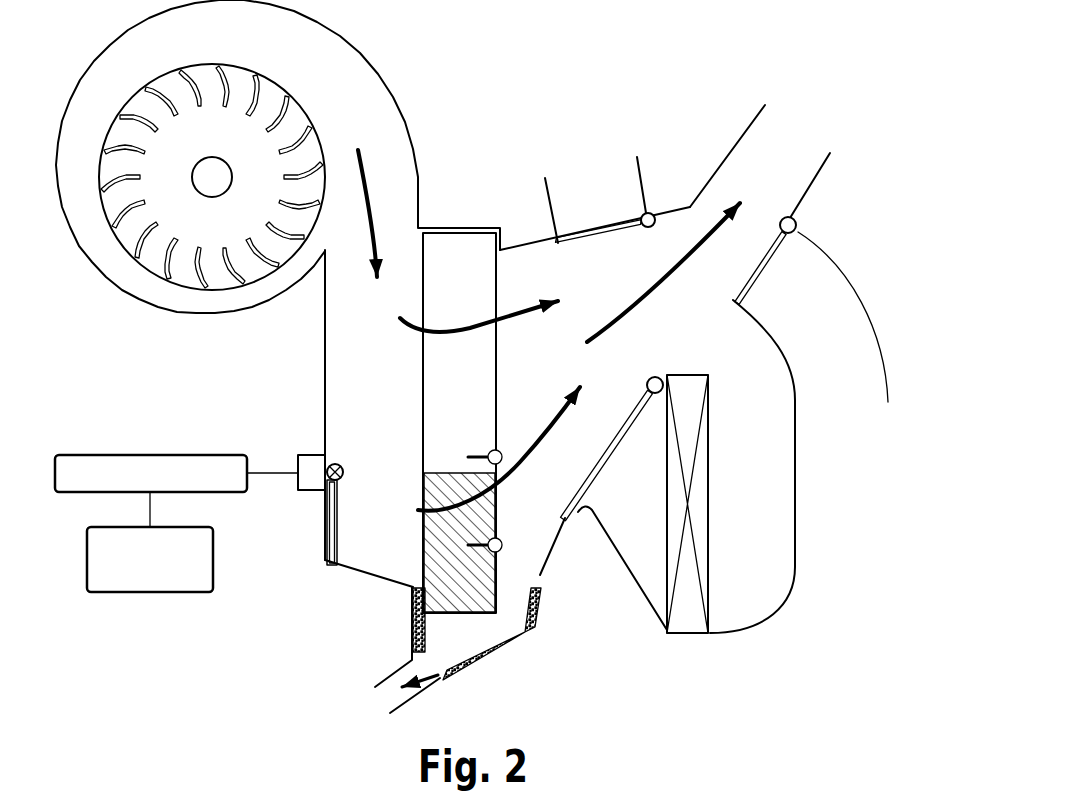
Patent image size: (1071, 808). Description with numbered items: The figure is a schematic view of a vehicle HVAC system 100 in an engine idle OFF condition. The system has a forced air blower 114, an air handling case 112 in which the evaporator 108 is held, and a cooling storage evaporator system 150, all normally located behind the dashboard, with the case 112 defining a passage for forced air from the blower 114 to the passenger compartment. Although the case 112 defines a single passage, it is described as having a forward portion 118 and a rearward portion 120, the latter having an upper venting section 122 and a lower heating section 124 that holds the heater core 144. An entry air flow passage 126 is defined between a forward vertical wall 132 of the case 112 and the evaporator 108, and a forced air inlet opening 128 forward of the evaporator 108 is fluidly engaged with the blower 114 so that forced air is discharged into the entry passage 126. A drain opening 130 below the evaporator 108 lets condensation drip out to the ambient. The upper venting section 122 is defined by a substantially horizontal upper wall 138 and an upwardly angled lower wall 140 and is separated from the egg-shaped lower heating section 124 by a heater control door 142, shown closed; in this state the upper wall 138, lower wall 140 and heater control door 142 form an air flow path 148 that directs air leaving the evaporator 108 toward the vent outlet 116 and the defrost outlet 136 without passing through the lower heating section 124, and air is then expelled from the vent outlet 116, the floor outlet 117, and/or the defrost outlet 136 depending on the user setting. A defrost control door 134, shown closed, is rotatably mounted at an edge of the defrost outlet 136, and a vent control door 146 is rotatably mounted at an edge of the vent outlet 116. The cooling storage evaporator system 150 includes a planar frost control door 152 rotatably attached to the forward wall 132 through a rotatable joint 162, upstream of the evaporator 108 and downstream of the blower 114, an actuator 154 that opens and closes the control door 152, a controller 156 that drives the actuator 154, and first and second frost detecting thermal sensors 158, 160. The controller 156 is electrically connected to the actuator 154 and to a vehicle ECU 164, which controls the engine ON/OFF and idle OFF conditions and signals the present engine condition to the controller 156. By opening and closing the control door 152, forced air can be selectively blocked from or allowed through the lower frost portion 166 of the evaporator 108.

The HVAC system 100 is at (843, 188).
The evaporator 108 is at (453, 270).
The air handling case 112 is at (735, 102).
The forced air blower 114 is at (340, 102).
The vent outlet 116 is at (783, 148).
The floor outlet 117 is at (843, 387).
The forward portion 118 is at (387, 592).
The rearward portion 120 is at (623, 600).
The upper venting section 122 is at (673, 250).
The lower heating section 124 is at (750, 460).
The entry air flow passage 126 is at (352, 343).
The forced air inlet opening 128 is at (350, 236).
The drain opening 130 is at (438, 677).
The forward vertical wall 132 is at (325, 392).
The defrost control door 134 is at (606, 232).
The defrost outlet 136 is at (595, 180).
The upper wall 138 is at (520, 240).
The lower wall 140 is at (545, 575).
The heater control door 142 is at (607, 447).
The heater core 144 is at (702, 540).
The vent control door 146 is at (763, 272).
The air flow path 148 is at (553, 443).
The cooling storage evaporator system 150 is at (148, 402).
The frost control door 152 is at (337, 548).
The actuator 154 is at (305, 490).
The controller 156 is at (143, 455).
The first frost detecting thermal sensor 158 is at (500, 452).
The second frost detecting thermal sensor 160 is at (503, 541).
The rotatable joint 162 is at (333, 462).
The vehicle ECU 164 is at (133, 592).
The frost portion 166 is at (420, 537).